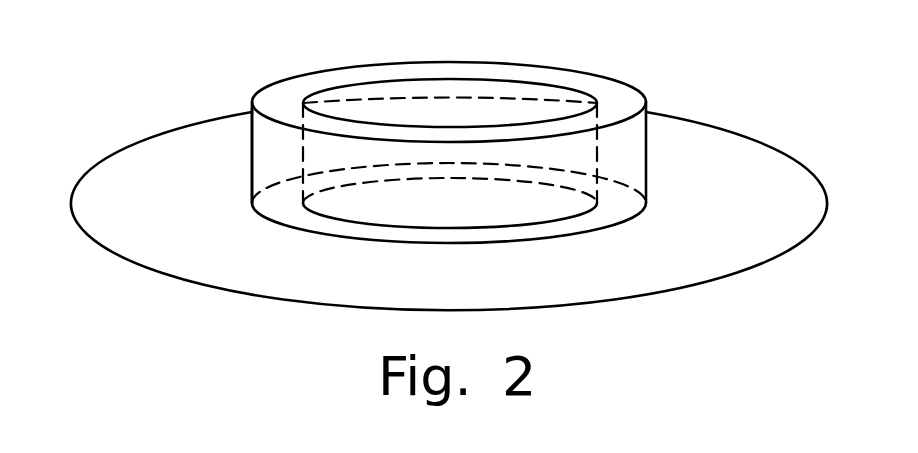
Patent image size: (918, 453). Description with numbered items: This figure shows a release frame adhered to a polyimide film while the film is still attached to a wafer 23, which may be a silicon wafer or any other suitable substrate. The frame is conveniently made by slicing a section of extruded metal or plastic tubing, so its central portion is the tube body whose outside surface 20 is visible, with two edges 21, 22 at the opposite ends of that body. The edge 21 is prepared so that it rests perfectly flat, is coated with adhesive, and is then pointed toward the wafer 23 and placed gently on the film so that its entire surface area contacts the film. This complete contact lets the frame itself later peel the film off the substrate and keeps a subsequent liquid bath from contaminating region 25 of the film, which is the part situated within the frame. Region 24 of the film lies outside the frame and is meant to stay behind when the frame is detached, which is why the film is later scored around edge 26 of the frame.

The outside surface of the frame 20 is at (250, 148).
The edge of the frame 21 is at (470, 165).
The edge of the frame 22 is at (285, 87).
The wafer 23 is at (110, 149).
The region of the polyimide film 24 is at (244, 186).
The region of the polyimide film 25 is at (450, 150).
The edge of the frame 26 is at (577, 242).